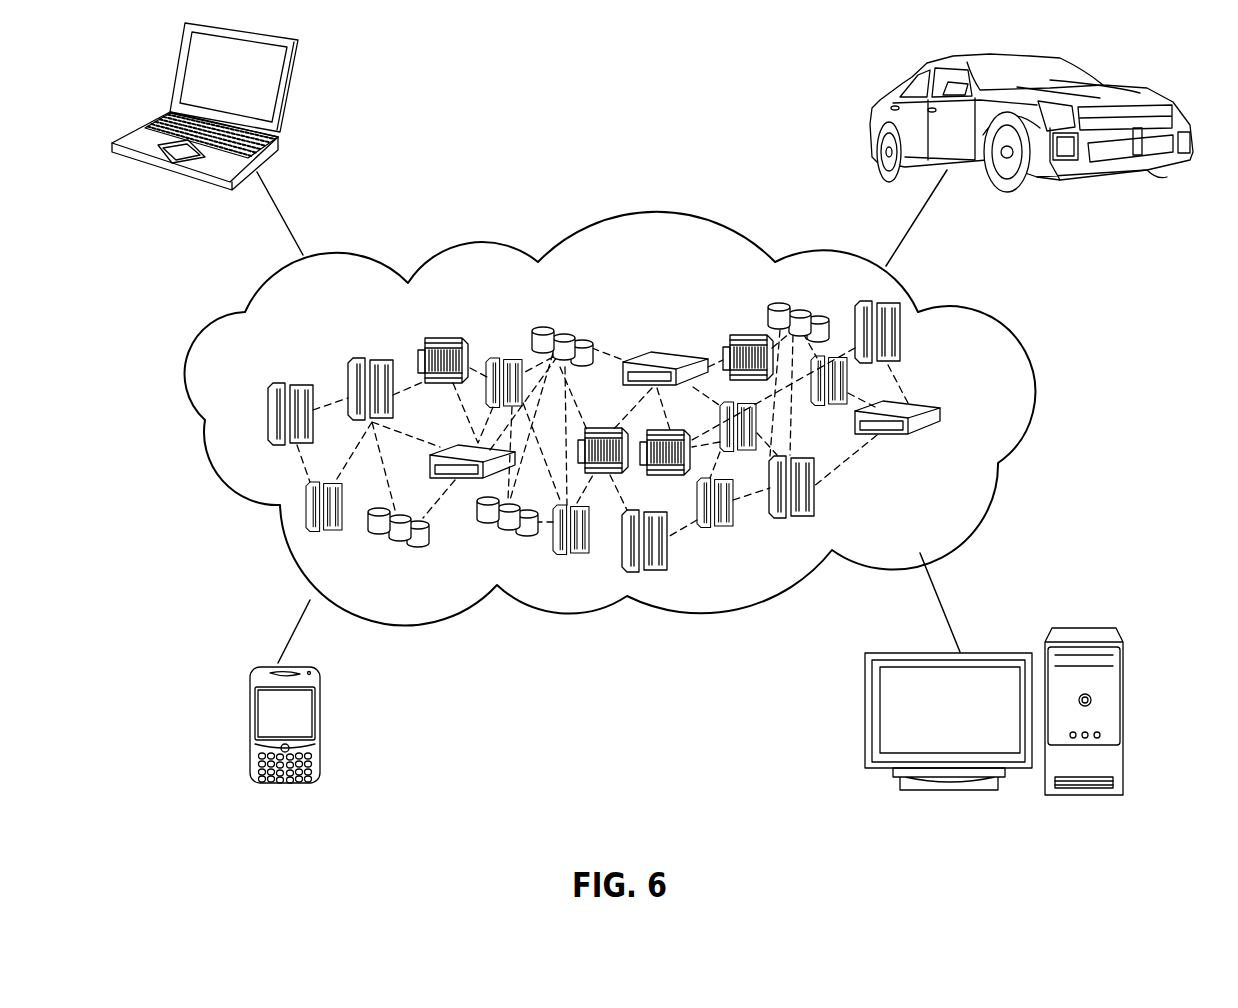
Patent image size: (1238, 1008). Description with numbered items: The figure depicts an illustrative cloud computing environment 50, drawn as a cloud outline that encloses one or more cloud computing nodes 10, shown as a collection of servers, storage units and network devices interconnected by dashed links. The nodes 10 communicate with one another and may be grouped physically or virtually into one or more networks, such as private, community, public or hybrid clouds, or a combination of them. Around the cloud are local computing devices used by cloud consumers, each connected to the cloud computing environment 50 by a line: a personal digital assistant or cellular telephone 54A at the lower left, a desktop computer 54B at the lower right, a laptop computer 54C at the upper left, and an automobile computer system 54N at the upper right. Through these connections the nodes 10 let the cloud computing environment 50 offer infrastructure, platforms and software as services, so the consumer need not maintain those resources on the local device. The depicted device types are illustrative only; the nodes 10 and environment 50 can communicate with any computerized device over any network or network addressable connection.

The cloud computing nodes 10 is at (993, 417).
The cloud computing environment 50 is at (1008, 328).
The personal digital assistant (PDA) or cellular telephone 54A is at (250, 730).
The desktop computer 54B is at (1088, 628).
The laptop computer 54C is at (290, 93).
The automobile computer system 54N is at (880, 103).